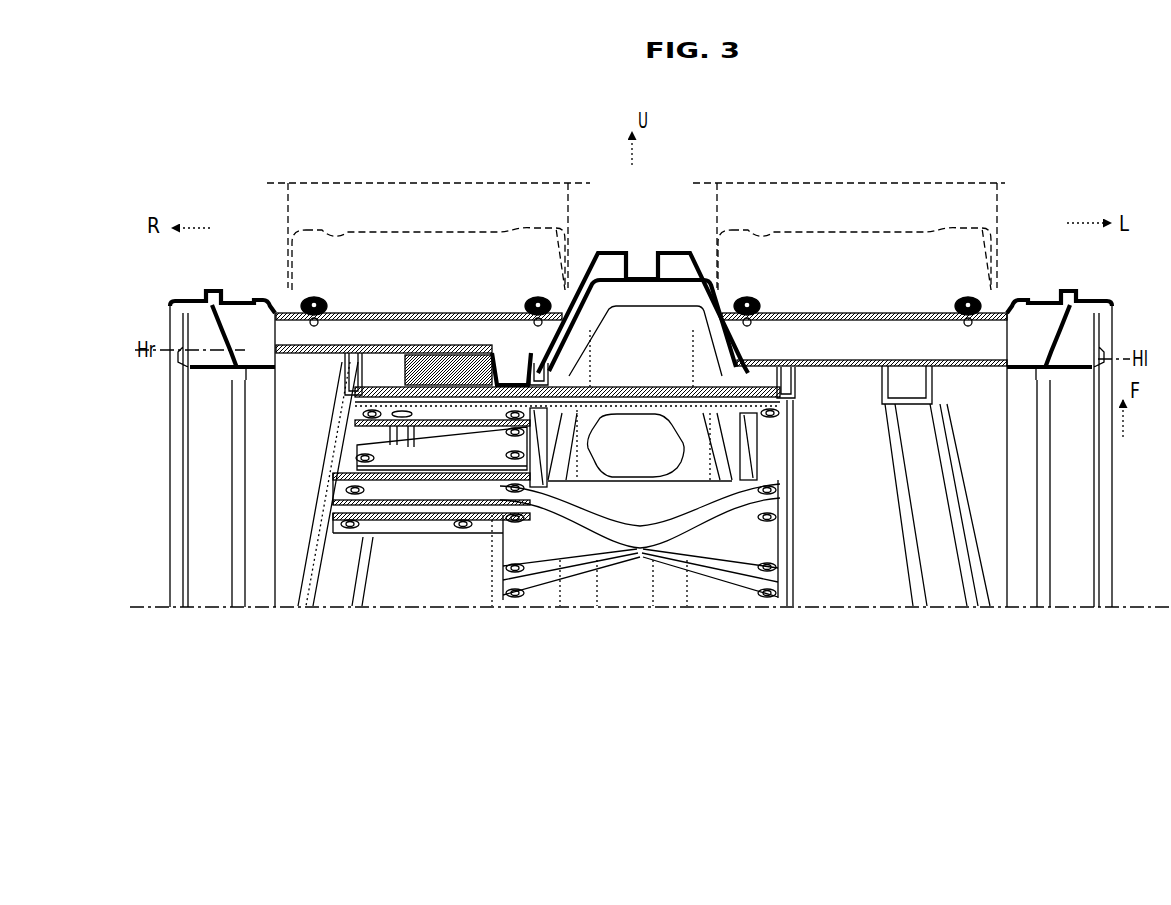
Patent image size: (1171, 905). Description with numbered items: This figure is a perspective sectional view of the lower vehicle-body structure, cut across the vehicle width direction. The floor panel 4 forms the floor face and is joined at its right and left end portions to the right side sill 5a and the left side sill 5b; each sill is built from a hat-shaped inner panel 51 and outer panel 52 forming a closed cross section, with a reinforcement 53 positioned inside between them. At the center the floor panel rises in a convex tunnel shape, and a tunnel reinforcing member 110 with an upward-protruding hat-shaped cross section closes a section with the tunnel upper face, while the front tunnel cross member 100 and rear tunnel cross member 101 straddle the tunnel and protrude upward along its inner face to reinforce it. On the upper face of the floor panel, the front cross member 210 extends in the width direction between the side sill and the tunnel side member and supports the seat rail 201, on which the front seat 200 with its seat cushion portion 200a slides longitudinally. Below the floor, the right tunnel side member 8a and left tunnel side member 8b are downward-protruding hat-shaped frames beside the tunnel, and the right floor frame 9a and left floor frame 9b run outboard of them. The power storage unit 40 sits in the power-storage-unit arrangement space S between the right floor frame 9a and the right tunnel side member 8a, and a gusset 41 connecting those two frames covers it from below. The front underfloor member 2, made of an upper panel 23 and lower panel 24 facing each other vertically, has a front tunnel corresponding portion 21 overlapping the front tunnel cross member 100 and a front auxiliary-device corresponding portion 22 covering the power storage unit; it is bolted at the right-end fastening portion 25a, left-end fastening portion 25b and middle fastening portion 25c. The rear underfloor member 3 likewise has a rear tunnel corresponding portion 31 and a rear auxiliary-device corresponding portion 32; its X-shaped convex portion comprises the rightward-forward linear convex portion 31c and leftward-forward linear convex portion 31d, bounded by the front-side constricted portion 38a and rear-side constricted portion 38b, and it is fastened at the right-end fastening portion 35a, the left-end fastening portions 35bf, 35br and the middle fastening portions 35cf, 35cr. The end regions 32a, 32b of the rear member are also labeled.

The front seat 200 is at (290, 243).
The seat cushion portion 200a is at (455, 228).
The tunnel reinforcing member 110 is at (611, 252).
The front tunnel cross member 100 is at (620, 308).
The front cross member 210 is at (401, 311).
The seat rail 201 is at (326, 302).
The outer panel 52 is at (172, 302).
The right side sill 5a is at (236, 299).
The left side sill 5b is at (1041, 299).
The reinforcement 53 is at (240, 357).
The inner panel 51 is at (258, 369).
The floor panel 4 is at (427, 344).
The power-storage-unit arrangement space S is at (399, 365).
The power storage unit 40 is at (478, 347).
The right tunnel side member 8a is at (563, 377).
The left tunnel side member 8b is at (791, 398).
The front underfloor member 2 is at (682, 385).
The upper panel 23 is at (598, 387).
The lower panel 24 is at (648, 395).
The right floor frame 9a is at (348, 369).
The left floor frame 9b is at (925, 390).
The right-end fastening portion 25a is at (357, 422).
The left-end fastening portion 25b is at (779, 413).
The middle fastening portion 25c is at (508, 415).
The front auxiliary-device corresponding portion 22 is at (442, 449).
The gusset 41 is at (358, 458).
The right-end fastening portion 35a is at (336, 501).
The rear auxiliary-device corresponding portion 32 is at (331, 514).
The front middle fastening portion 35cf is at (511, 485).
The rear middle fastening portion 35cr is at (505, 594).
The front left-end fastening portion 35bf is at (778, 519).
The rear left-end fastening portion 35br is at (778, 593).
The front tunnel corresponding portion 21 is at (659, 415).
The rightward-forward linear convex portion 31c is at (590, 515).
The leftward-forward linear convex portion 31d is at (690, 510).
The rear tunnel cross member 101 is at (627, 427).
The front-side constricted portion 38a is at (622, 518).
The rear-side constricted portion 38b is at (606, 570).
The rear tunnel corresponding portion 31 is at (661, 570).
The rear underfloor member 3 is at (583, 580).
The right leg portion 32a is at (700, 575).
The left leg portion 32b is at (707, 577).